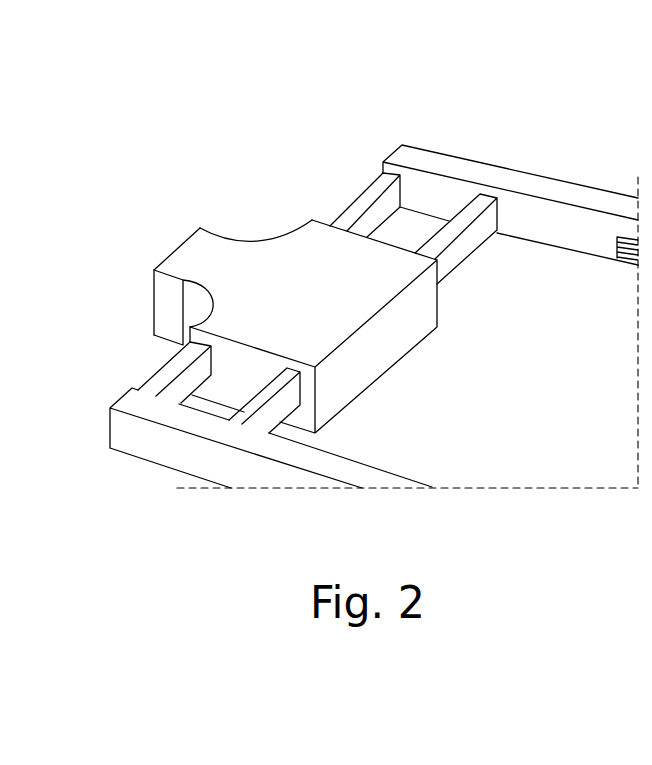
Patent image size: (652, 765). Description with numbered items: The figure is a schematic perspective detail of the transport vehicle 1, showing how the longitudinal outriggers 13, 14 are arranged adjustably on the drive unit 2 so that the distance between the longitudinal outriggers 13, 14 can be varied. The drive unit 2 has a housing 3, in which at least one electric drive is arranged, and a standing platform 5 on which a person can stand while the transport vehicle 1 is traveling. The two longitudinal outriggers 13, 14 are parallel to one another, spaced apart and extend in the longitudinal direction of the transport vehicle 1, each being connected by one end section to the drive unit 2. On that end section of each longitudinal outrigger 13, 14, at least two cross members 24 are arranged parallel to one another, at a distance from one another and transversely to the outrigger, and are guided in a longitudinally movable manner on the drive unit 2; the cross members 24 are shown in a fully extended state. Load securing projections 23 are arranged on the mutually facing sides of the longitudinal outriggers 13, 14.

The transport vehicle 1 is at (378, 109).
The drive unit 2 is at (255, 306).
The housing 3 is at (180, 257).
The standing platform 5 is at (265, 252).
The longitudinal outrigger 13 is at (373, 483).
The longitudinal outrigger 14 is at (525, 235).
The load securing projection 23 is at (630, 237).
The cross member 24 is at (367, 210).